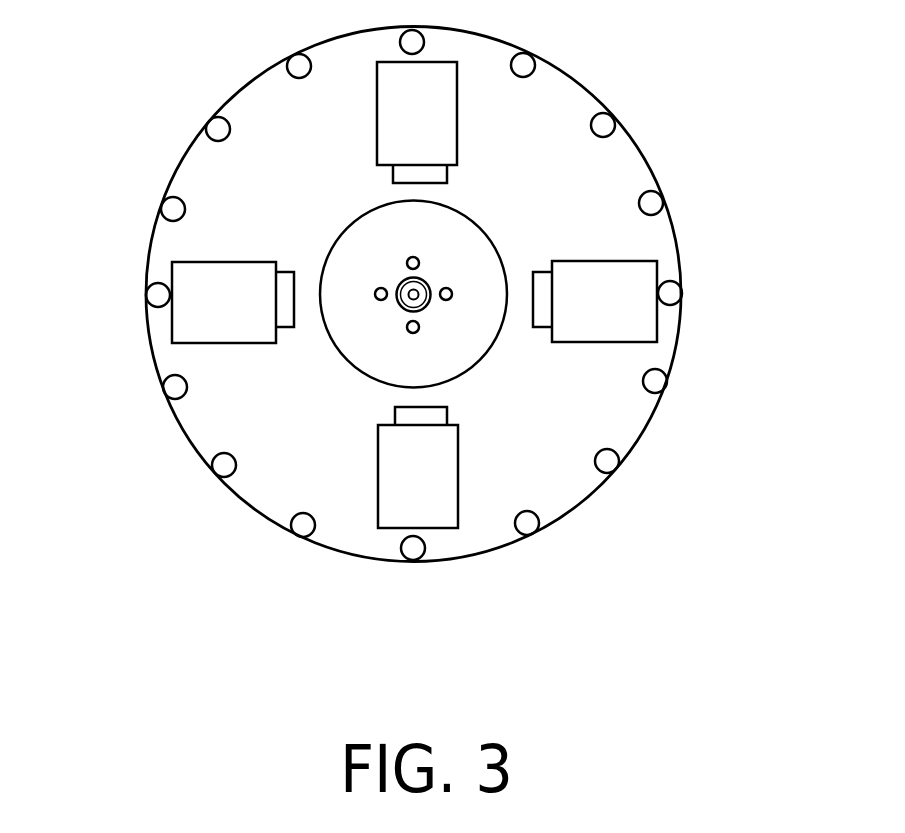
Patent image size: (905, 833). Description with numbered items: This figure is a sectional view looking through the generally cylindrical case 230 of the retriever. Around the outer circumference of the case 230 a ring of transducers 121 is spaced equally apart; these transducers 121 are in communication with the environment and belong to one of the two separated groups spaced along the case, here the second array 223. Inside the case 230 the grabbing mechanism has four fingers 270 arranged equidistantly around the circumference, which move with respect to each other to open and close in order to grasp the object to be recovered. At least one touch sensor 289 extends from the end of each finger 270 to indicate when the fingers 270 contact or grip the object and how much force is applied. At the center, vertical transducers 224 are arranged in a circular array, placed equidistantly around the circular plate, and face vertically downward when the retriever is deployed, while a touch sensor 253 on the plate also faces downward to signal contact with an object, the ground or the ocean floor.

The transducers 121 is at (293, 54).
The case 230 is at (232, 495).
The fingers 270 is at (657, 273).
The touch sensor 289 is at (404, 185).
The vertical transducer 224 is at (417, 258).
The touch sensor 253 is at (423, 305).
The second array 223 is at (513, 524).